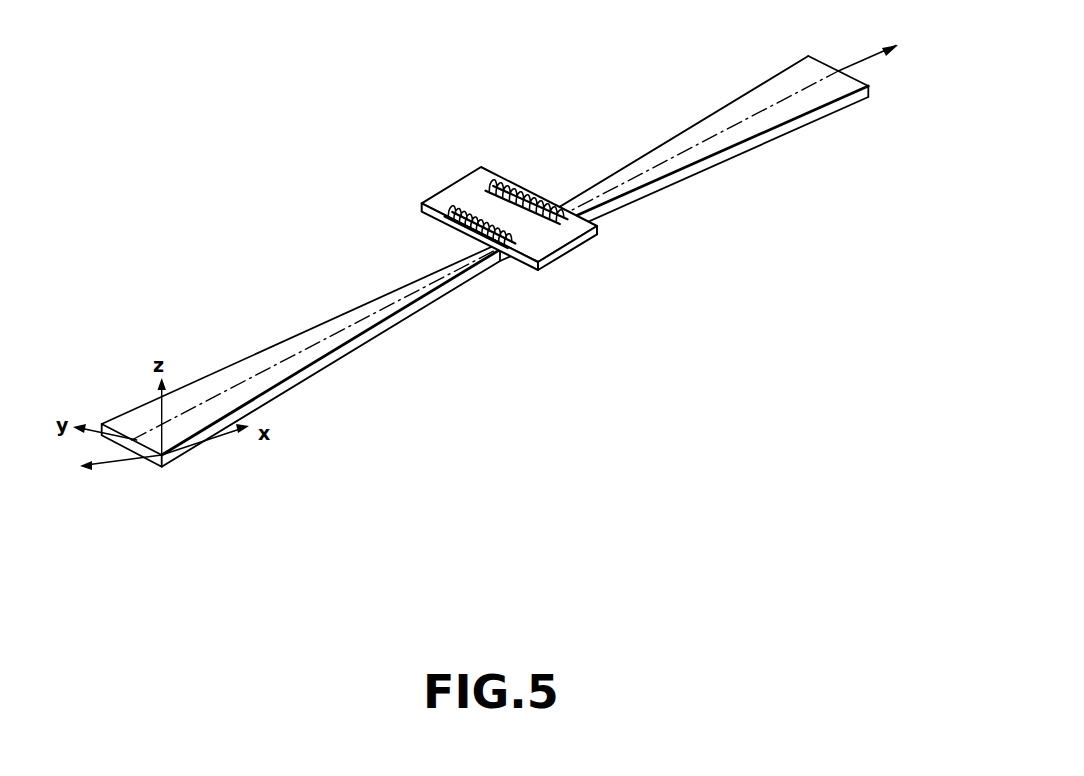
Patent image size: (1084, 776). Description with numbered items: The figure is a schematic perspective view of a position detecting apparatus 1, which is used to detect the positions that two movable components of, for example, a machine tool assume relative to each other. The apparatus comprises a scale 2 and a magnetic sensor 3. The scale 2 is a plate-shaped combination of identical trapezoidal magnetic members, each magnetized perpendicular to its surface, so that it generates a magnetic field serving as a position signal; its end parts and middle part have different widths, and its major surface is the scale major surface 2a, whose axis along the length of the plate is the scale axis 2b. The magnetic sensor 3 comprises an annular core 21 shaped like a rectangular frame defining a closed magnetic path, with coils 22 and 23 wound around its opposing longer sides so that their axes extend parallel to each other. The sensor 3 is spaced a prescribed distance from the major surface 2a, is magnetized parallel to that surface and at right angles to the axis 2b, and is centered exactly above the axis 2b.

The position detecting apparatus 1 is at (500, 237).
The scale 2 is at (500, 237).
The scale major surface 2a is at (790, 80).
The scale axis 2b is at (750, 121).
The magnetic sensor 3 is at (499, 206).
The annular core 21 is at (471, 185).
The coil 22 is at (452, 230).
The coil 23 is at (530, 185).